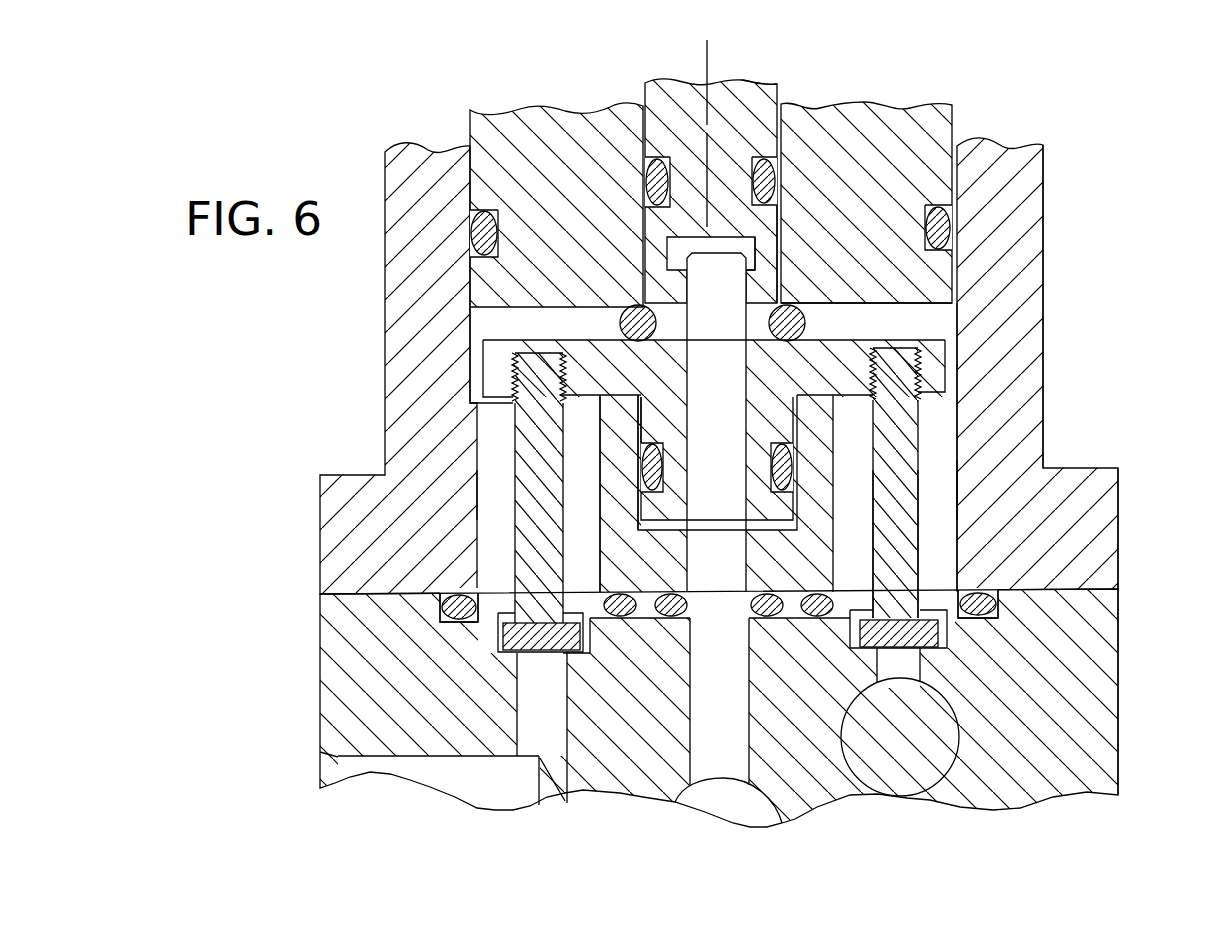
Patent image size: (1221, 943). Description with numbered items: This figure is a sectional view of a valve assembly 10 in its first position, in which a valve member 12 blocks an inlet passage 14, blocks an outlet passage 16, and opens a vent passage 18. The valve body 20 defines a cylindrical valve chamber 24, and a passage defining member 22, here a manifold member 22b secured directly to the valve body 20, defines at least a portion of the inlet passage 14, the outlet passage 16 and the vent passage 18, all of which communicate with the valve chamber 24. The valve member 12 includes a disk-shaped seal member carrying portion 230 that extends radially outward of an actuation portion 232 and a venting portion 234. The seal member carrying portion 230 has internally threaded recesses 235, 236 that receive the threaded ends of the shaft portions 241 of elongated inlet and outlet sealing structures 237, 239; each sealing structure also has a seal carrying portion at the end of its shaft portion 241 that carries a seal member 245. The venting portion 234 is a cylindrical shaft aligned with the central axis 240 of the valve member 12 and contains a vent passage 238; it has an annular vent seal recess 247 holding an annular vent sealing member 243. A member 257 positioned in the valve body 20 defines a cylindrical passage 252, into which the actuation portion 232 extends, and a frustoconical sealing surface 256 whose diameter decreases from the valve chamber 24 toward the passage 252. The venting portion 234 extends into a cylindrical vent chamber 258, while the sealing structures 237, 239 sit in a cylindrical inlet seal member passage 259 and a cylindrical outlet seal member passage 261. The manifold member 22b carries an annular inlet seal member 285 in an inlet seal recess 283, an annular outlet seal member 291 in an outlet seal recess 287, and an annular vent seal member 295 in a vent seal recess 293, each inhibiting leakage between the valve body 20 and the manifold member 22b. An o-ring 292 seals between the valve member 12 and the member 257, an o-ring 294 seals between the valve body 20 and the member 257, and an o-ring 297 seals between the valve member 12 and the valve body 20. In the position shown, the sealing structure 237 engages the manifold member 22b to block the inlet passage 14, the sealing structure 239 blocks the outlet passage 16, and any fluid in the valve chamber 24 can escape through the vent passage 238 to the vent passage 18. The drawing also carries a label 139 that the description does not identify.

The valve assembly 10 is at (1075, 247).
The valve member 12 is at (727, 80).
The inlet passage 14 is at (543, 727).
The outlet passage 16 is at (887, 670).
The vent passage 18 is at (705, 722).
The valve body 20 is at (1008, 183).
The passage defining member 22 is at (1076, 707).
The manifold member 22b is at (1085, 762).
The valve chamber 24 is at (913, 327).
The stem guide 139 is at (752, 228).
The seal member carrying portion 230 is at (490, 340).
The actuation portion 232 is at (772, 86).
The venting portion 234 is at (663, 410).
The internally threaded recess 235 is at (512, 368).
The internally threaded recess 236 is at (919, 378).
The elongated inlet sealing structure 237 is at (517, 454).
The vent passage 238 is at (723, 388).
The elongated outlet sealing structure 239 is at (898, 523).
The central axis 240 is at (705, 66).
The shaft portion 241 is at (894, 466).
The annular vent sealing member 243 is at (797, 308).
The seal member 245 is at (933, 645).
The annular vent seal recess 247 is at (652, 308).
The cylindrical passage 252 is at (643, 143).
The frustoconical sealing surface 256 is at (800, 292).
The member 257 is at (880, 120).
The cylindrical vent chamber 258 is at (667, 527).
The cylindrical inlet seal member passage 259 is at (477, 506).
The cylindrical outlet seal member passage 261 is at (960, 492).
The inlet seal recess 283 is at (455, 623).
The annular inlet seal member 285 is at (459, 593).
The outlet seal recess 287 is at (953, 620).
The annular outlet seal member 291 is at (998, 600).
The o-ring 292 is at (655, 180).
The vent seal recess 293 is at (672, 620).
The o-ring 294 is at (472, 234).
The annular vent seal member 295 is at (675, 592).
The o-ring 297 is at (773, 464).